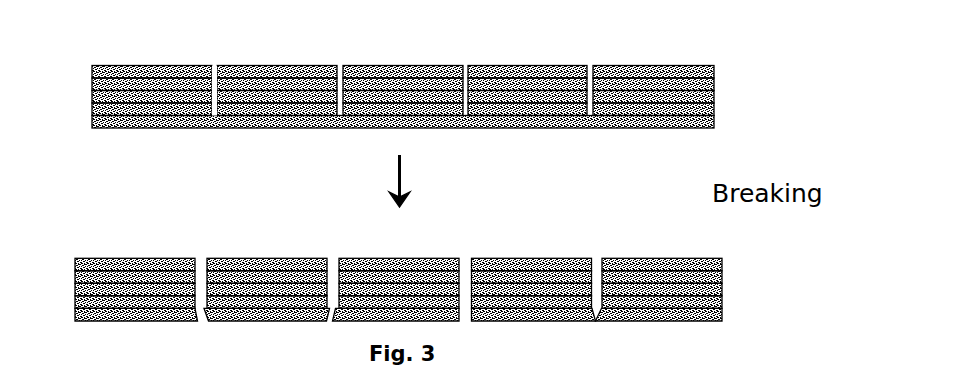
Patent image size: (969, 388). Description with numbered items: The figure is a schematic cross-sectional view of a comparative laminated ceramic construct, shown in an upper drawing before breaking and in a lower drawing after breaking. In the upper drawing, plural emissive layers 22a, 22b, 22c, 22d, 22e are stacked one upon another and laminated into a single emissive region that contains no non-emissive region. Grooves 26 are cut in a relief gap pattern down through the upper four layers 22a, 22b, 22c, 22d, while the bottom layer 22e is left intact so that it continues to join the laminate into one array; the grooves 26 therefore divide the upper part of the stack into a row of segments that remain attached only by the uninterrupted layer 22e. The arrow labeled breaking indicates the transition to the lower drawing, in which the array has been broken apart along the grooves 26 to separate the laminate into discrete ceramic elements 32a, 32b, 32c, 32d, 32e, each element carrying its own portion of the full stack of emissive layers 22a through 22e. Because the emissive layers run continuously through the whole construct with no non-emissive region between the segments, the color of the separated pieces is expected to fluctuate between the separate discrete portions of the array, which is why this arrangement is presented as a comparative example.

The emissive layer 22a is at (100, 68).
The emissive layer 22b is at (100, 82).
The emissive layer 22c is at (100, 97).
The emissive layer 22d is at (98, 108).
The emissive layer 22e is at (99, 122).
The groove 26 is at (214, 68).
The discrete ceramic element 32a is at (128, 258).
The discrete ceramic element 32b is at (265, 258).
The discrete ceramic element 32c is at (395, 258).
The discrete ceramic element 32d is at (532, 258).
The discrete ceramic element 32e is at (662, 258).